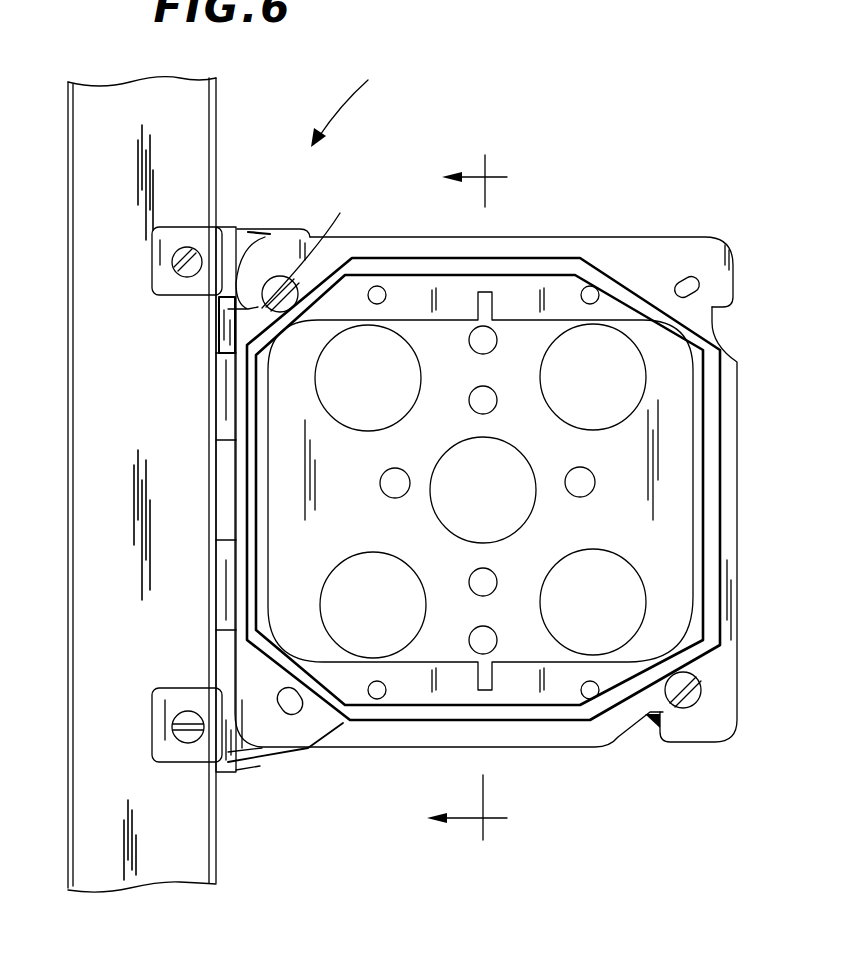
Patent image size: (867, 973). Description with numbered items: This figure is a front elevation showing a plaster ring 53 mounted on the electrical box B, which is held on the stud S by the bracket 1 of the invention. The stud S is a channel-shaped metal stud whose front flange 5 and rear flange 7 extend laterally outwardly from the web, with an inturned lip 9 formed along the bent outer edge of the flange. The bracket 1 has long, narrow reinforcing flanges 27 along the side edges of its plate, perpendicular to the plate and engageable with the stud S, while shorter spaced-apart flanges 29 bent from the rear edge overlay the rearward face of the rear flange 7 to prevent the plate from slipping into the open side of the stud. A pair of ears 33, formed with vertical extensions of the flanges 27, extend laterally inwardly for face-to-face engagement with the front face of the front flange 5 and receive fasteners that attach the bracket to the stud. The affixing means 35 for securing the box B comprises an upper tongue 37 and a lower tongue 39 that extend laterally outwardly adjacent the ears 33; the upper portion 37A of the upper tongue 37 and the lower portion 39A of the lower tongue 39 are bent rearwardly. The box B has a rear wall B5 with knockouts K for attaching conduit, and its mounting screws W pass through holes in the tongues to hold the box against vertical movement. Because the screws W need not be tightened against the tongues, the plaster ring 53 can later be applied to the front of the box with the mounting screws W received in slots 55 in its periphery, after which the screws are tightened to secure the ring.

The bracket 1 is at (350, 106).
The front flange 5 is at (95, 118).
The stud S is at (140, 82).
The inturned lip 9 is at (218, 118).
The reinforcing flanges 27 is at (232, 236).
The spaced-apart flanges 29 is at (222, 380).
The ears 33 is at (162, 290).
The affixing means 35 is at (288, 772).
The upper tongue 37 is at (252, 231).
The upper portion of upper tongue 37A is at (293, 230).
The lower tongue 39 is at (312, 730).
The lower portion of lower tongue 39A is at (318, 757).
The plaster ring 53 is at (676, 252).
The slots 55 is at (296, 285).
The electrical box B is at (725, 325).
The rear wall B5 is at (680, 482).
The mounting screws W is at (698, 690).
The knockouts K is at (400, 368).
The rear flange 7 is at (467, 497).